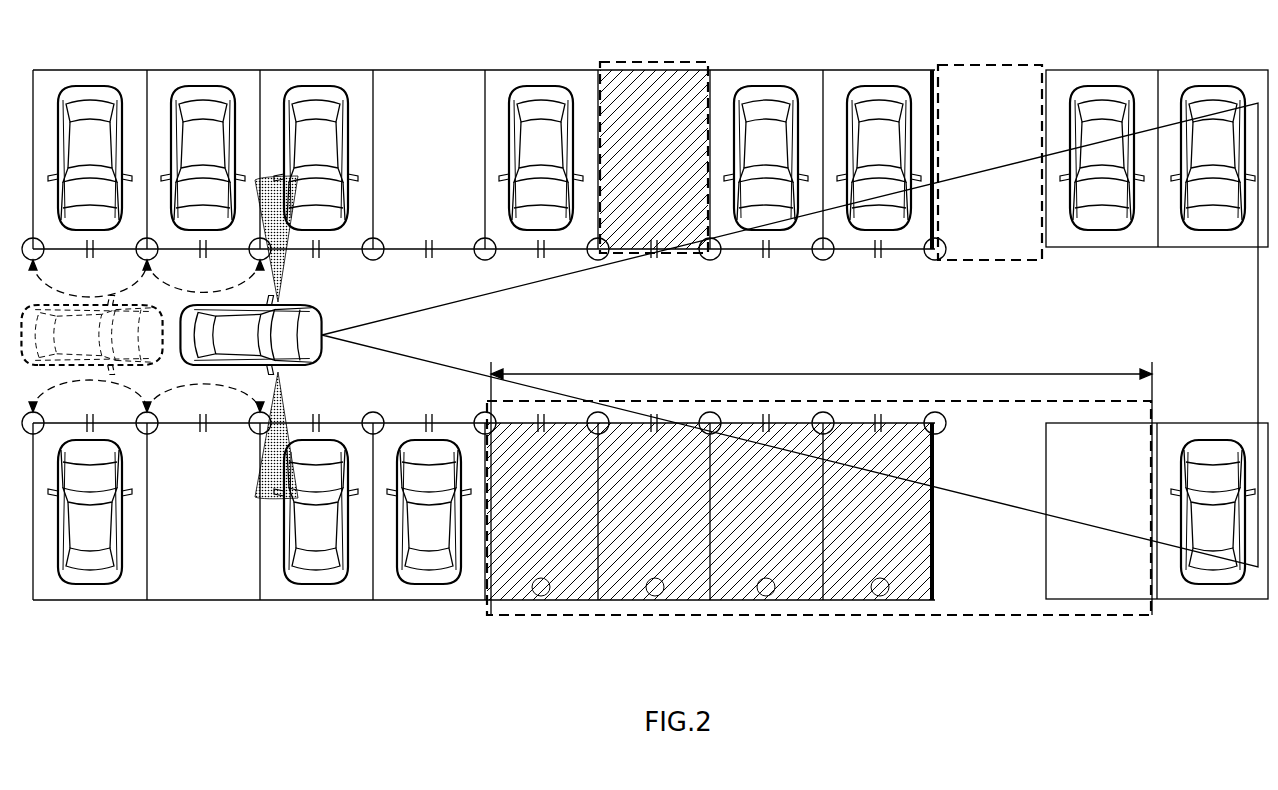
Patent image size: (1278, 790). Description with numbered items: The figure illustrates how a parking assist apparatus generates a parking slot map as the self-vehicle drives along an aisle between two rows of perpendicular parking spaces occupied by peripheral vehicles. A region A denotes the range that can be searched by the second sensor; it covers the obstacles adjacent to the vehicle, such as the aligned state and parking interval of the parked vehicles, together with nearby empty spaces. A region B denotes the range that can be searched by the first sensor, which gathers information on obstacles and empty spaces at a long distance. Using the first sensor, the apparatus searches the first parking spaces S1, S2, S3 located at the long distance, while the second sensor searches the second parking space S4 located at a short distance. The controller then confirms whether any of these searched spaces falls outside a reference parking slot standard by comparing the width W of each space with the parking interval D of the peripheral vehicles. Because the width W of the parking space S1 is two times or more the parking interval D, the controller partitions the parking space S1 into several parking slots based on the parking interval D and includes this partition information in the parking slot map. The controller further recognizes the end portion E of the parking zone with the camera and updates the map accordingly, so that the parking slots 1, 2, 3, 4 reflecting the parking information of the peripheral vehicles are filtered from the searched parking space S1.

The first parking space S1 is at (819, 544).
The first parking space S2 is at (675, 62).
The first parking space S3 is at (975, 65).
The second parking space S4 is at (203, 511).
The end portion of the parking zone E is at (932, 70).
The region searchable by the second sensor A is at (276, 337).
The region searchable by the first sensor B is at (903, 325).
The parking interval of the peripheral vehicles D is at (146, 336).
The width of the parking space W is at (821, 481).
The parking slot 1 is at (541, 587).
The parking slot 2 is at (655, 587).
The parking slot 3 is at (766, 587).
The parking slot 4 is at (880, 587).